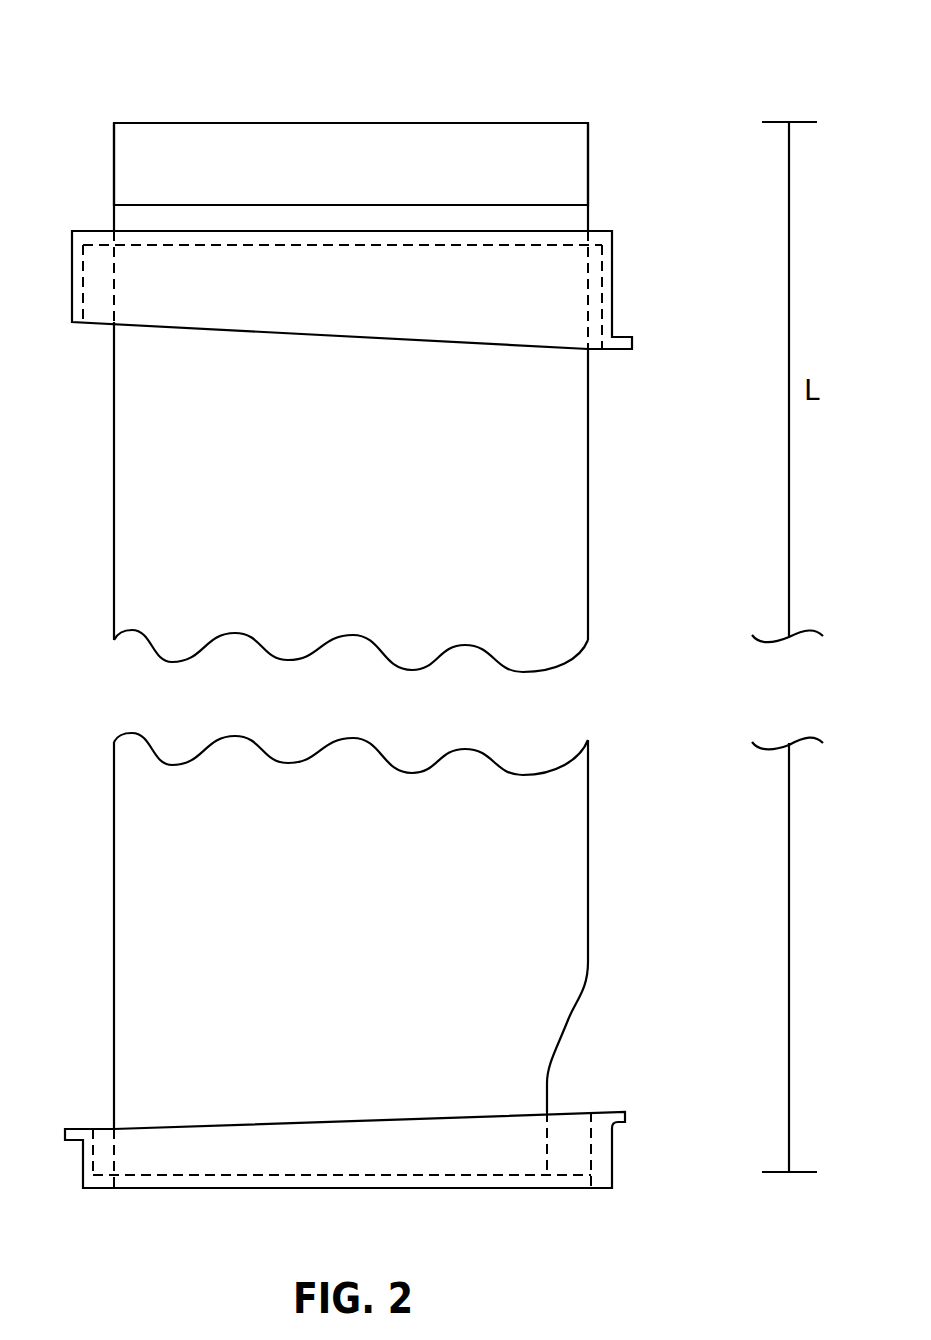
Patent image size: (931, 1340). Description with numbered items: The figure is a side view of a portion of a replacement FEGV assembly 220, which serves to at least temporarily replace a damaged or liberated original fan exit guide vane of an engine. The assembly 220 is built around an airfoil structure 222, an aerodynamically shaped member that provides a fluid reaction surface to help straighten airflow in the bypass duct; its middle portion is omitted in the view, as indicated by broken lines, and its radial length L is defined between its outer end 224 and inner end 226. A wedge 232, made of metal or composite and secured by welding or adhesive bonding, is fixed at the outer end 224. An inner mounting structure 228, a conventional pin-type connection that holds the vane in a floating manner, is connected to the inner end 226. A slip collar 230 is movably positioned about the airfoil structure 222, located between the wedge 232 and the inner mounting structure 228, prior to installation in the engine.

The replacement FEGV assembly 220 is at (626, 75).
The airfoil structure 222 is at (552, 488).
The outer end 224 is at (180, 123).
The inner end 226 is at (215, 1157).
The inner mounting structure 228 is at (612, 1155).
The slip collar 230 is at (612, 283).
The wedge 232 is at (358, 142).